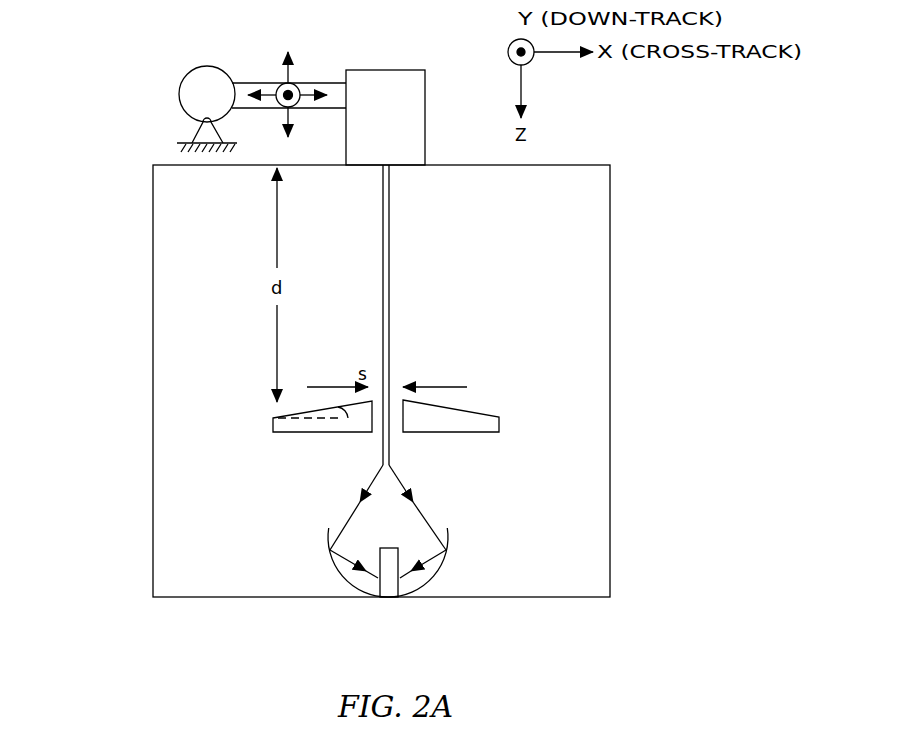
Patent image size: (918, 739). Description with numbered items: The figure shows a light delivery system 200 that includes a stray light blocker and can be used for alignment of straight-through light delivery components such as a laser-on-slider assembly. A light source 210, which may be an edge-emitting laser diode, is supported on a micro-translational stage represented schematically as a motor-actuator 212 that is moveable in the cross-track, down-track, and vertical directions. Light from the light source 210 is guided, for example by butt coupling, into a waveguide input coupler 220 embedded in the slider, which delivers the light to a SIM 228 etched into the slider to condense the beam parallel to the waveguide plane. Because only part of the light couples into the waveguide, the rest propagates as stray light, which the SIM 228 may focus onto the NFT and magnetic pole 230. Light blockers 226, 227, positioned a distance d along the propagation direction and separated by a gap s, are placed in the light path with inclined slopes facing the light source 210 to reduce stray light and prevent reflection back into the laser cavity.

The light delivery system 200 is at (134, 29).
The light source 210 is at (402, 126).
The motor-actuator 212 is at (180, 88).
The waveguide input coupler 220 is at (392, 258).
The light blocker 226 is at (273, 423).
The light blocker 227 is at (500, 427).
The SIM 228 is at (436, 573).
The NFT and magnetic pole 230 is at (395, 592).